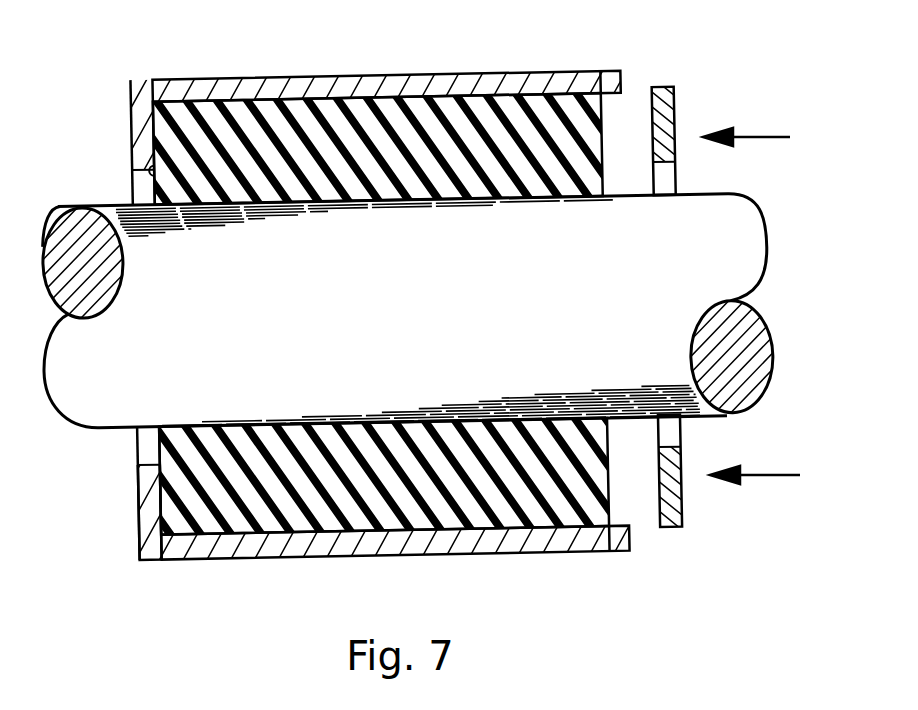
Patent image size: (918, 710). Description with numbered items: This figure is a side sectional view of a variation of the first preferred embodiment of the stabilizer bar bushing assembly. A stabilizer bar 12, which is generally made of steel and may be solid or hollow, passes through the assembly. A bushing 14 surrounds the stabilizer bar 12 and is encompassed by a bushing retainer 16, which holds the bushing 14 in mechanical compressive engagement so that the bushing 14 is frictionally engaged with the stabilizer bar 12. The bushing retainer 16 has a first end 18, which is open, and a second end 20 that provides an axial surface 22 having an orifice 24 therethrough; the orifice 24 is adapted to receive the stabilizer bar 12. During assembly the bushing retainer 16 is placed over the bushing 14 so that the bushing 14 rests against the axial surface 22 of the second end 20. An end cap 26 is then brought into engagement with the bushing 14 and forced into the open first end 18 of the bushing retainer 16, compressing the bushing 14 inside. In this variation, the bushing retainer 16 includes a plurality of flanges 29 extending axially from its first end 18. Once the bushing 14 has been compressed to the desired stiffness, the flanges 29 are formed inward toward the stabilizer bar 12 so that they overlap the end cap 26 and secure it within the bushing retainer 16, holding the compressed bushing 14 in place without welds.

The stabilizer bar 12 is at (728, 247).
The bushing 14 is at (270, 515).
The bushing retainer 16 is at (345, 555).
The first end 18 is at (627, 537).
The second end 20 is at (140, 533).
The axial surface 22 is at (153, 186).
The orifice 24 is at (150, 447).
The end cap 26 is at (668, 110).
The flanges 29 is at (608, 73).